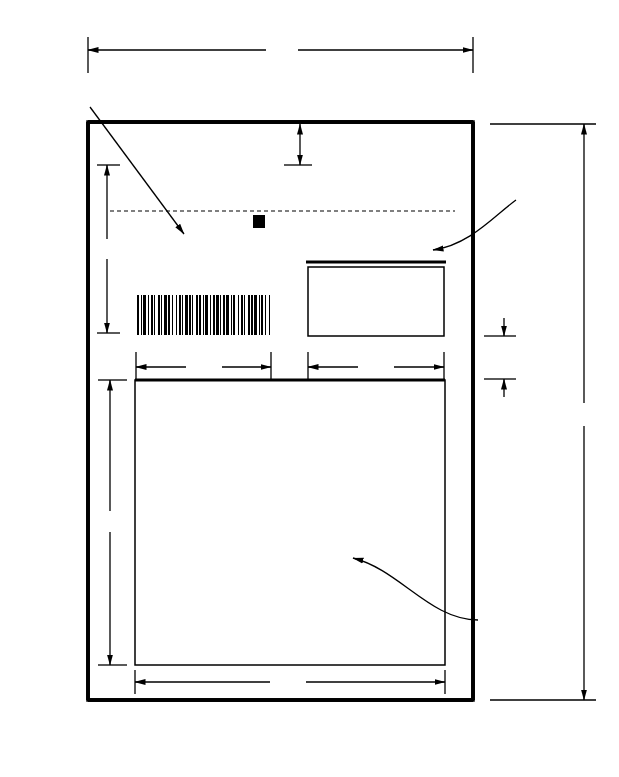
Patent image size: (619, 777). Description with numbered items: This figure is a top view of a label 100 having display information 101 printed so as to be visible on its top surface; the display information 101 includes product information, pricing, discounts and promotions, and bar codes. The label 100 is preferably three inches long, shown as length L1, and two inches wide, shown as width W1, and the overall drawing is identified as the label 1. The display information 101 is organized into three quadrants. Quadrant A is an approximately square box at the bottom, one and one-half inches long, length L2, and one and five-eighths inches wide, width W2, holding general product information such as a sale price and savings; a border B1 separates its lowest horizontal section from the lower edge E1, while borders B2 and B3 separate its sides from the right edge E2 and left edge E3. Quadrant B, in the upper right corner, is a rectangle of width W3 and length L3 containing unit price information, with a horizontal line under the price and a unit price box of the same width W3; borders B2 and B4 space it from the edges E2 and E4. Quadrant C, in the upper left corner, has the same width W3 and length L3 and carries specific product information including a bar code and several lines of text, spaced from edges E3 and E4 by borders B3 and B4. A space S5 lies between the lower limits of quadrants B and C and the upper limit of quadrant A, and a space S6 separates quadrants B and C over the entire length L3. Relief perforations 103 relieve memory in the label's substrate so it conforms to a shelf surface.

The label 1 is at (323, 390).
The label 100 is at (185, 120).
The display information 101 is at (302, 323).
The relief perforations 103 is at (112, 215).
The label width W1 is at (280, 55).
The quadrant A width W2 is at (290, 682).
The quadrant width W3 is at (290, 366).
The label length L1 is at (543, 412).
The quadrant A length L2 is at (112, 522).
The quadrant length L3 is at (108, 249).
The space S5 is at (500, 357).
The space S6 is at (297, 143).
The border B1 is at (360, 692).
The border B2 is at (460, 487).
The border B3 is at (100, 459).
The border B4 is at (340, 141).
The edge E1 is at (195, 700).
The edge E2 is at (475, 538).
The edge E3 is at (88, 551).
The edge E4 is at (418, 121).